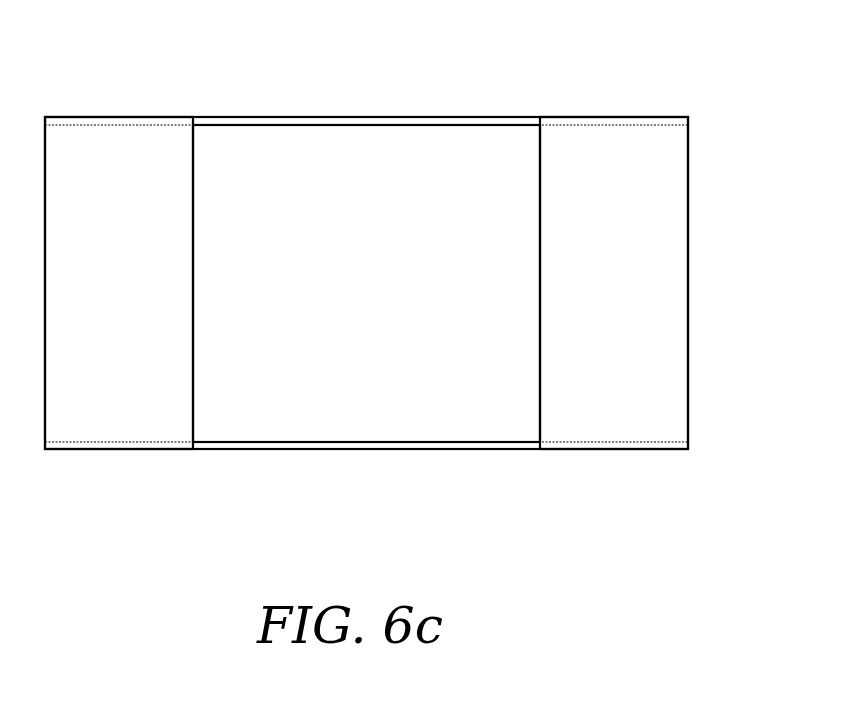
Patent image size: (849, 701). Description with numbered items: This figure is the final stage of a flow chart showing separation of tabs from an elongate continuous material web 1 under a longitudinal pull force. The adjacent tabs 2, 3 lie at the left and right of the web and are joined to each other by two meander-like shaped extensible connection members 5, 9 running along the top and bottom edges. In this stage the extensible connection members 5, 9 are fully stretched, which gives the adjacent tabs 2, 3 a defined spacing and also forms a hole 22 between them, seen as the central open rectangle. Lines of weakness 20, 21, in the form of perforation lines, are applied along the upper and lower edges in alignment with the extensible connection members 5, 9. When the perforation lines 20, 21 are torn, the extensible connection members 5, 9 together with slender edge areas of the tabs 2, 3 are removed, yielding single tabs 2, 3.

The continuous material web 1 is at (695, 113).
The tab 2 is at (128, 300).
The tab 3 is at (624, 300).
The extensible connection member 5 is at (450, 117).
The extensible connection member 9 is at (248, 449).
The line of weakness 20 is at (148, 125).
The line of weakness 21 is at (612, 442).
The hole 22 is at (322, 167).